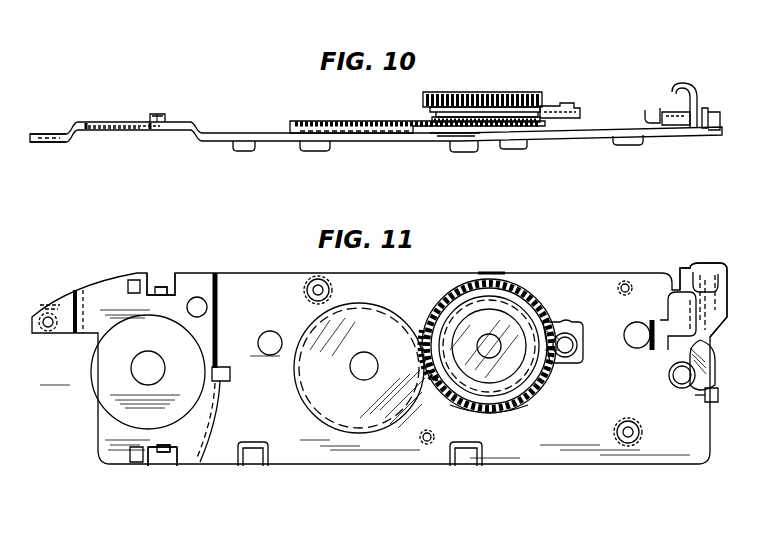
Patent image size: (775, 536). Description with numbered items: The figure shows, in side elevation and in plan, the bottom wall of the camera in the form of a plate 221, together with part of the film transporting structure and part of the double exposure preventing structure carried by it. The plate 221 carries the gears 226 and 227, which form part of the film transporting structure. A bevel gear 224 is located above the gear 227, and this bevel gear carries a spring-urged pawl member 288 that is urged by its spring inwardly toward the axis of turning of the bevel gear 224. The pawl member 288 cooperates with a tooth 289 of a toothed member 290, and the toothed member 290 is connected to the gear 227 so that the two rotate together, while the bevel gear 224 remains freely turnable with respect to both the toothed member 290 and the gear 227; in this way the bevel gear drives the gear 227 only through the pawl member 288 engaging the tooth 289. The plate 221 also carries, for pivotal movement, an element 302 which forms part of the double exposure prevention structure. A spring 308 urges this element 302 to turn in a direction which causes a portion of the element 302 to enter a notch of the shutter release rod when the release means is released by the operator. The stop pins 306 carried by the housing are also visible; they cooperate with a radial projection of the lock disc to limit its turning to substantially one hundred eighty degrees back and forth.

In FIG. 10, the plate 221 is at (58, 138).
In FIG. 11, the plate 221 is at (310, 452).
In FIG. 10, the bevel gear 224 is at (520, 93).
In FIG. 11, the bevel gear 224 is at (533, 298).
In FIG. 10, the gear 226 is at (300, 114).
In FIG. 11, the gear 226 is at (306, 400).
In FIG. 10, the gear 227 is at (440, 136).
In FIG. 11, the gear 227 is at (500, 410).
In FIG. 10, the pawl member 288 is at (578, 110).
In FIG. 11, the pawl member 288 is at (576, 360).
In FIG. 11, the tooth 289 is at (445, 301).
In FIG. 10, the toothed member 290 is at (426, 118).
In FIG. 11, the toothed member 290 is at (490, 295).
In FIG. 10, the element 302 is at (697, 94).
In FIG. 11, the element 302 is at (687, 270).
In FIG. 10, the stop pins 306 is at (152, 116).
In FIG. 10, the spring 308 is at (718, 117).
In FIG. 11, the spring 308 is at (710, 402).